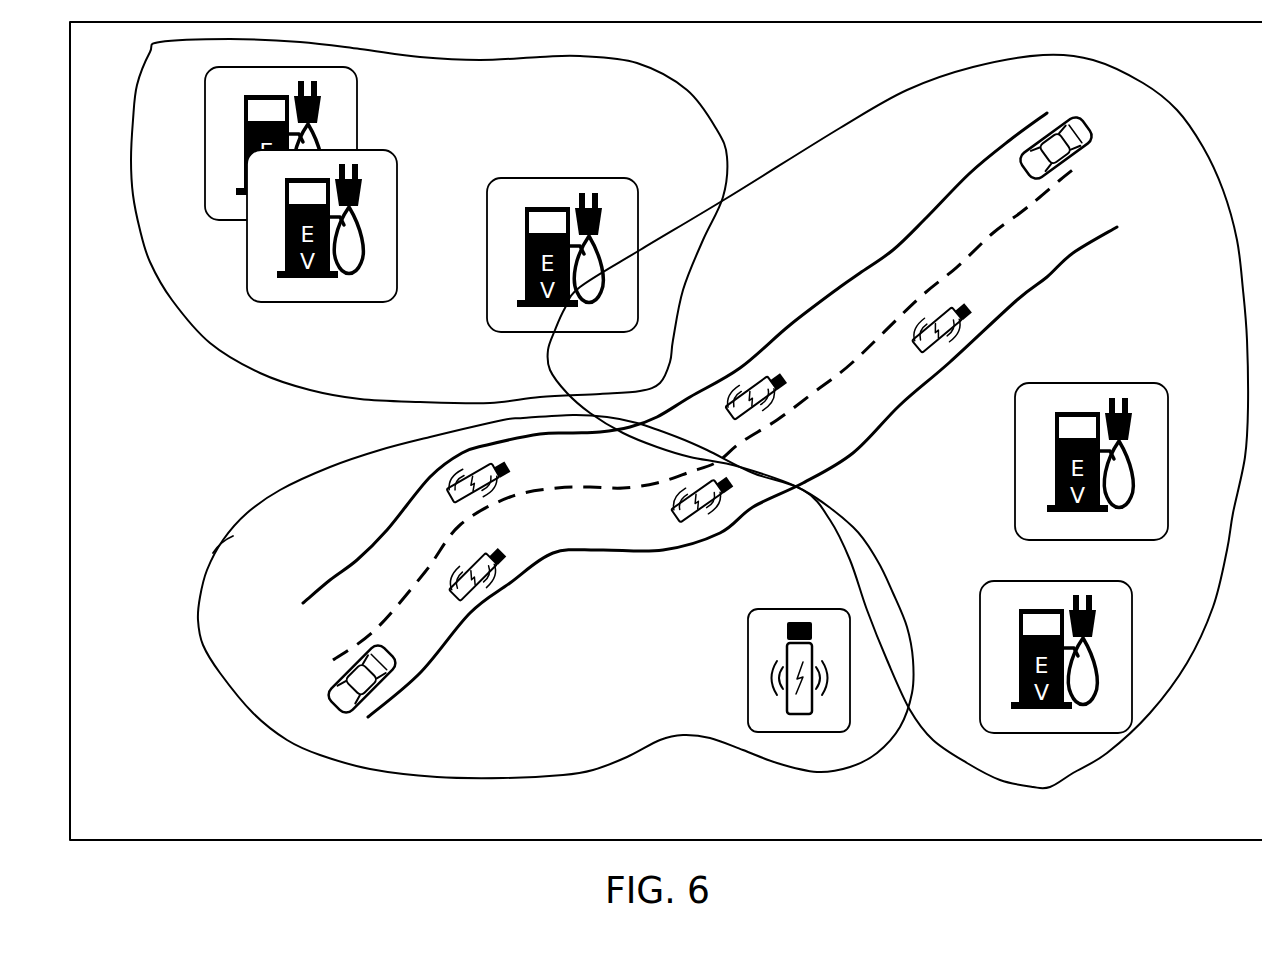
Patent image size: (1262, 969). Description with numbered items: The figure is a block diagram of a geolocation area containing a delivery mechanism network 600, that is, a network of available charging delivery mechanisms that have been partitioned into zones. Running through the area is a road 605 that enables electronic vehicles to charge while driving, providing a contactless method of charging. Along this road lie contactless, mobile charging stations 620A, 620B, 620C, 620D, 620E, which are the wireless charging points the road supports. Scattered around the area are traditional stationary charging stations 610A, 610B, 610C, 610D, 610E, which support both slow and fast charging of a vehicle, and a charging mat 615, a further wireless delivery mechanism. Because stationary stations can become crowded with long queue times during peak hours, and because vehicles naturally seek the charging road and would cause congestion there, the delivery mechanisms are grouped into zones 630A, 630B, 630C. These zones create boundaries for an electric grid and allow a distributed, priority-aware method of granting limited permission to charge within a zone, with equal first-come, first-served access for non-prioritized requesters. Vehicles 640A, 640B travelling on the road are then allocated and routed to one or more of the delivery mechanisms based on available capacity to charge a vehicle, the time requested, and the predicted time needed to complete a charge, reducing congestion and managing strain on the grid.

The delivery mechanism network 600 is at (876, 70).
The road 605 is at (1070, 259).
The stationary charging station 610A is at (352, 126).
The stationary charging station 610B is at (397, 172).
The stationary charging station 610C is at (633, 220).
The stationary charging station 610D is at (1163, 408).
The stationary charging station 610E is at (1132, 630).
The charging mat 615 is at (748, 680).
The contactless mobile charging station 620A is at (490, 587).
The contactless mobile charging station 620B is at (457, 473).
The contactless mobile charging station 620C is at (718, 510).
The contactless mobile charging station 620D is at (773, 373).
The contactless mobile charging station 620E is at (958, 330).
The zone 630A is at (723, 137).
The zone 630B is at (233, 680).
The zone 630C is at (1075, 772).
The vehicle 640A is at (380, 697).
The vehicle 640B is at (1073, 165).